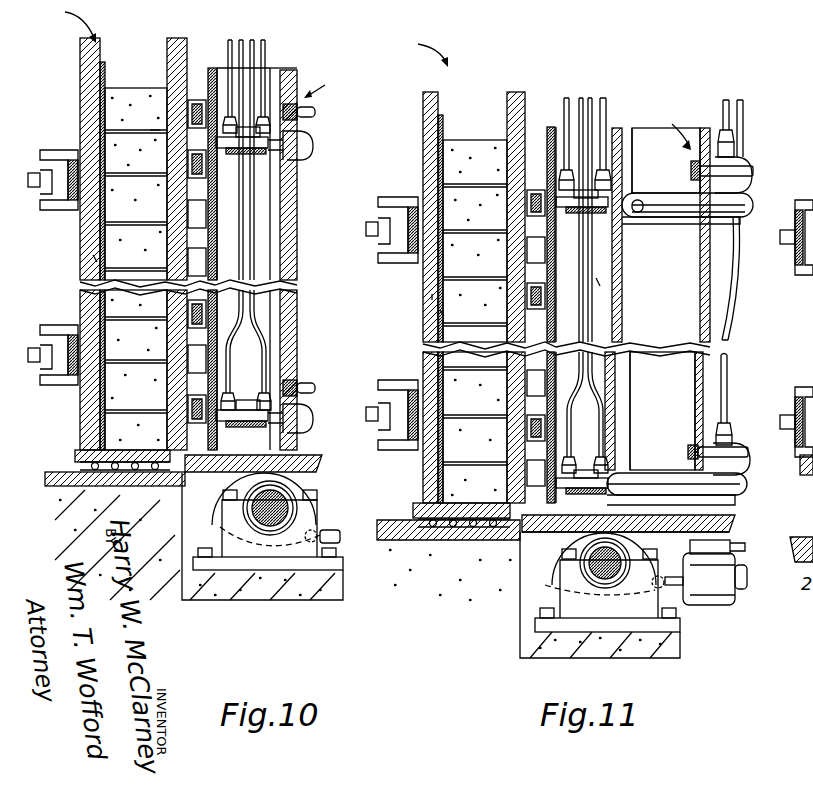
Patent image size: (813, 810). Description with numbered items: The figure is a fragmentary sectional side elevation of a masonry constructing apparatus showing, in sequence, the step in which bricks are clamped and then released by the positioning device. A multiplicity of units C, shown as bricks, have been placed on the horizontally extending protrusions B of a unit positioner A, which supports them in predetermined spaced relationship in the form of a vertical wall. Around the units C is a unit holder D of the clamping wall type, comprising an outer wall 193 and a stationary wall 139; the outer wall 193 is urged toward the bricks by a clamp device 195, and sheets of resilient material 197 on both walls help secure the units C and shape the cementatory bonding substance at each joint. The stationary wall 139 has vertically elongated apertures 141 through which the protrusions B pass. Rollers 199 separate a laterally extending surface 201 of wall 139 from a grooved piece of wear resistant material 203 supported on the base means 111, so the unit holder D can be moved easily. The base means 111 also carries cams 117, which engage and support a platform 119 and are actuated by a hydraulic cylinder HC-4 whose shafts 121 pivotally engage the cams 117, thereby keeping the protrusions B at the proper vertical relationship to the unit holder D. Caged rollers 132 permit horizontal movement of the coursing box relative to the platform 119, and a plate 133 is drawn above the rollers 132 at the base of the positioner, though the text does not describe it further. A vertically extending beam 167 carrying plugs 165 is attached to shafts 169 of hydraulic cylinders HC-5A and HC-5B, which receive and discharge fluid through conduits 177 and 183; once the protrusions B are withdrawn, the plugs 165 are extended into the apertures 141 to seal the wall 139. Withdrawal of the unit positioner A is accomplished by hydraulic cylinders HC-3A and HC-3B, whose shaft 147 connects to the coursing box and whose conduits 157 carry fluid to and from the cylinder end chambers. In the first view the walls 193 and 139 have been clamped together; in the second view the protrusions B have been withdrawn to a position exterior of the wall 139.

In FIG. 10, the unit holder D is at (58, 19).
In FIG. 11, the unit holder D is at (411, 51).
In FIG. 10, the outer wall 193 is at (80, 46).
In FIG. 11, the outer wall 193 is at (424, 100).
In FIG. 10, the sheets of resilient material 197 is at (102, 68).
In FIG. 11, the sheets of resilient material 197 is at (441, 118).
In FIG. 10, the units C is at (115, 106).
In FIG. 11, the units C is at (453, 141).
In FIG. 10, the stationary wall 139 is at (177, 40).
In FIG. 11, the stationary wall 139 is at (516, 92).
In FIG. 10, the vertically extending beam 167 is at (212, 68).
In FIG. 11, the vertically extending beam 167 is at (551, 127).
In FIG. 10, the shafts 169 is at (218, 148).
In FIG. 11, the shafts 169 is at (562, 222).
In FIG. 10, the conduits 177 is at (232, 52).
In FIG. 11, the conduits 177 is at (566, 100).
In FIG. 10, the conduits 183 is at (255, 52).
In FIG. 11, the conduits 183 is at (583, 102).
In FIG. 10, the shaft 147 is at (314, 112).
In FIG. 11, the shaft 147 is at (753, 172).
In FIG. 10, the hydraulic cylinder HC-5A is at (255, 150).
In FIG. 11, the hydraulic cylinder HC-5A is at (606, 215).
In FIG. 10, the hydraulic cylinder HC-5B is at (246, 400).
In FIG. 11, the hydraulic cylinder HC-5B is at (592, 470).
In FIG. 10, the unit positioner A is at (341, 81).
In FIG. 11, the unit positioner A is at (671, 120).
In FIG. 10, the protrusions B is at (150, 130).
In FIG. 11, the protrusions B is at (598, 282).
In FIG. 10, the clamp device 195 is at (50, 211).
In FIG. 11, the clamp device 195 is at (401, 253).
In FIG. 10, the apertures 141 is at (93, 258).
In FIG. 11, the apertures 141 is at (440, 312).
In FIG. 10, the laterally extending surface 201 is at (86, 450).
In FIG. 11, the laterally extending surface 201 is at (415, 509).
In FIG. 10, the rollers 199 is at (90, 462).
In FIG. 11, the rollers 199 is at (462, 528).
In FIG. 10, the grooved piece of wear resistant material 203 is at (70, 478).
In FIG. 11, the grooved piece of wear resistant material 203 is at (420, 542).
In FIG. 10, the bed plate 133 is at (320, 468).
In FIG. 11, the bed plate 133 is at (730, 515).
In FIG. 10, the rollers 132 is at (290, 472).
In FIG. 11, the rollers 132 is at (652, 508).
In FIG. 10, the shafts 121 is at (338, 530).
In FIG. 11, the shafts 121 is at (738, 586).
In FIG. 10, the cams 117 is at (213, 497).
In FIG. 11, the cams 117 is at (560, 595).
In FIG. 10, the base means 111 is at (183, 576).
In FIG. 11, the base means 111 is at (527, 580).
In FIG. 11, the platform 119 is at (733, 527).
In FIG. 11, the plugs 165 is at (432, 297).
In FIG. 11, the conduits 157 is at (731, 320).
In FIG. 11, the hydraulic cylinder HC-3A is at (745, 160).
In FIG. 11, the hydraulic cylinder HC-3B is at (740, 466).
In FIG. 11, the hydraulic cylinder HC-4 is at (716, 606).